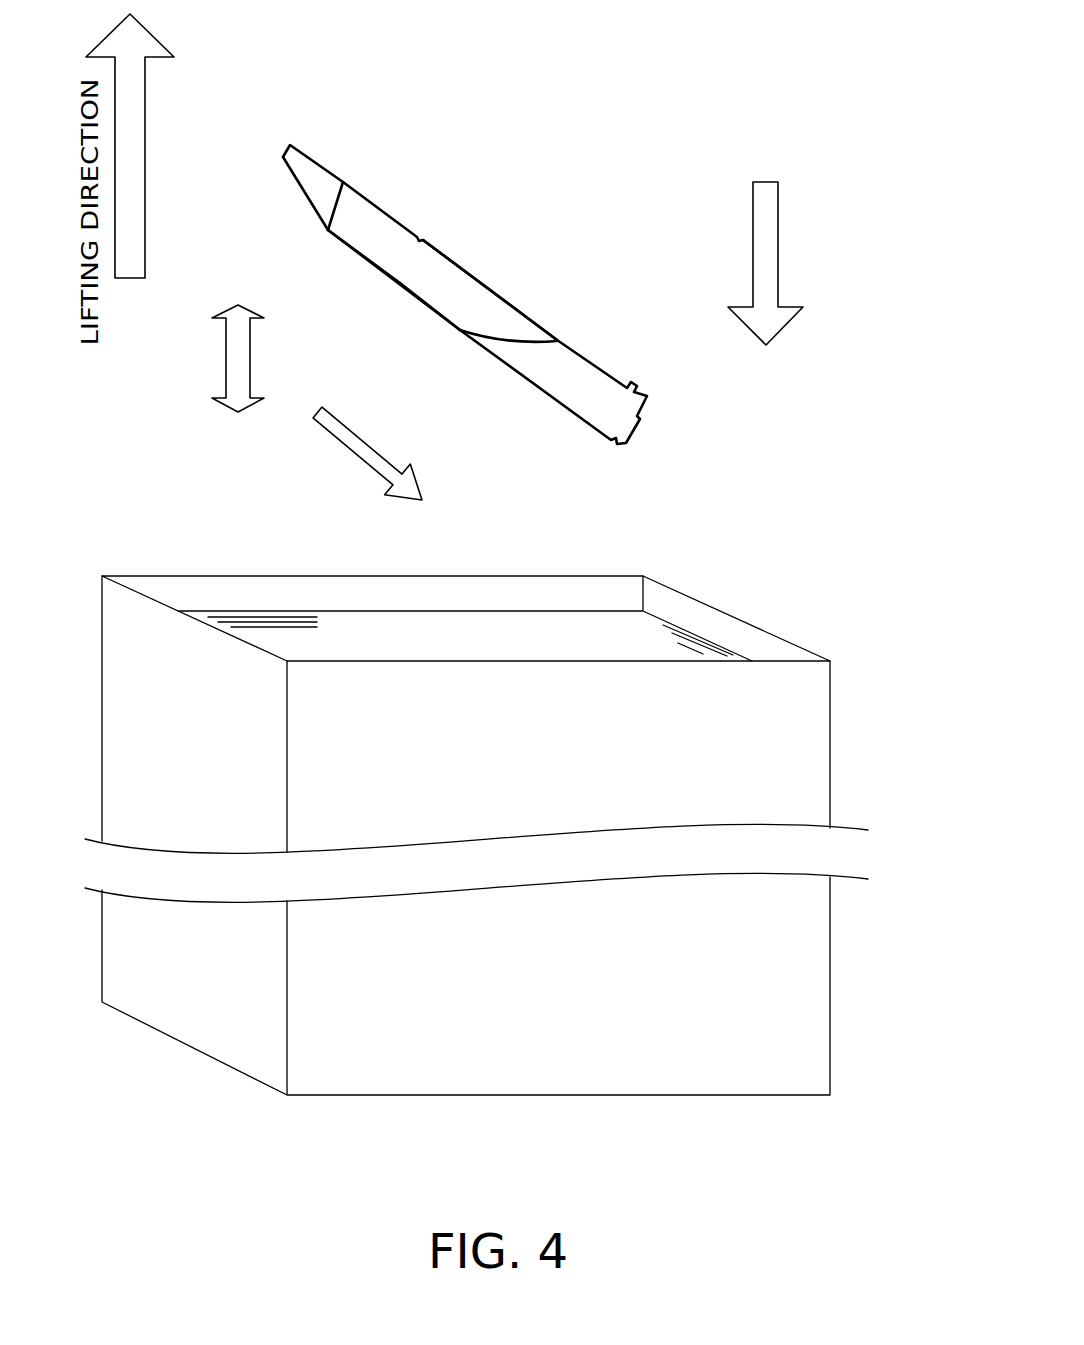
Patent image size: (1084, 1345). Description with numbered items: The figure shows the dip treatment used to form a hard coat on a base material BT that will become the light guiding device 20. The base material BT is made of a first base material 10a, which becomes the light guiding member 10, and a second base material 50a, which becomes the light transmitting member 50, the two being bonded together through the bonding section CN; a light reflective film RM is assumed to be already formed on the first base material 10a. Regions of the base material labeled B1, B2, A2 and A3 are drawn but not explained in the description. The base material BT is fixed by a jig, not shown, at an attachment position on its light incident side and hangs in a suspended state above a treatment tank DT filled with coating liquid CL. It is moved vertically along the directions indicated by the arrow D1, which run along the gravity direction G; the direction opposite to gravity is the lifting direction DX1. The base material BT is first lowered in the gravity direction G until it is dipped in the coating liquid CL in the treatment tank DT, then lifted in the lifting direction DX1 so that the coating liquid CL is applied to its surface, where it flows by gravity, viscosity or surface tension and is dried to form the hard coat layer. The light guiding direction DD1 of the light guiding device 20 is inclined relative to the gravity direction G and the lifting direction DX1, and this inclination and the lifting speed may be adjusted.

The base material BT is at (266, 114).
The light guiding device 20 is at (432, 237).
The lifting direction DX1 is at (140, 144).
The second blade portion B2 is at (308, 190).
The light reflective film RM is at (305, 197).
The third edge portion A3 is at (421, 237).
The first blade portion B1 is at (465, 290).
The second edge portion A2 is at (350, 252).
The first base material 10a is at (408, 277).
The light guiding member 10 is at (427, 286).
The bonding section CN is at (492, 337).
The second base material 50a is at (542, 368).
The light transmitting member 50 is at (531, 387).
The arrow D1 is at (233, 363).
The light guiding direction DD1 is at (352, 443).
The gravity direction G is at (770, 240).
The coating liquid CL is at (650, 633).
The treatment tank DT is at (503, 814).